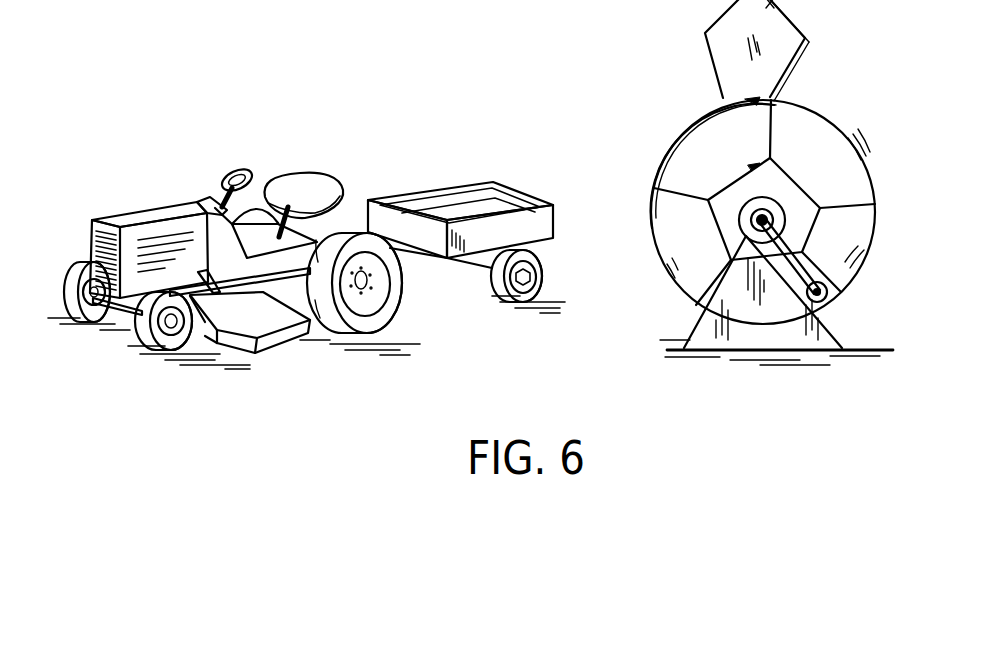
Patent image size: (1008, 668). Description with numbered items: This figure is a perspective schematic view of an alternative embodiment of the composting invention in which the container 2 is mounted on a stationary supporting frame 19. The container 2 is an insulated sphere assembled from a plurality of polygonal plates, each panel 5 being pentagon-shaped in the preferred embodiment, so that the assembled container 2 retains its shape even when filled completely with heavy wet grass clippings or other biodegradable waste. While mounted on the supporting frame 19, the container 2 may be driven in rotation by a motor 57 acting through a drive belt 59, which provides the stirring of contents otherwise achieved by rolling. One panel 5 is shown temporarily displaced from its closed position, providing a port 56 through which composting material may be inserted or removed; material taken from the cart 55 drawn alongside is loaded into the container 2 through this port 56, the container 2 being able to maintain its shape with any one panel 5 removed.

The container 2 is at (656, 277).
The panel 5 is at (832, 137).
The supporting frame 19 is at (835, 332).
The cart 55 is at (465, 186).
The port 56 is at (695, 143).
The motor 57 is at (829, 292).
The drive belt 59 is at (815, 257).